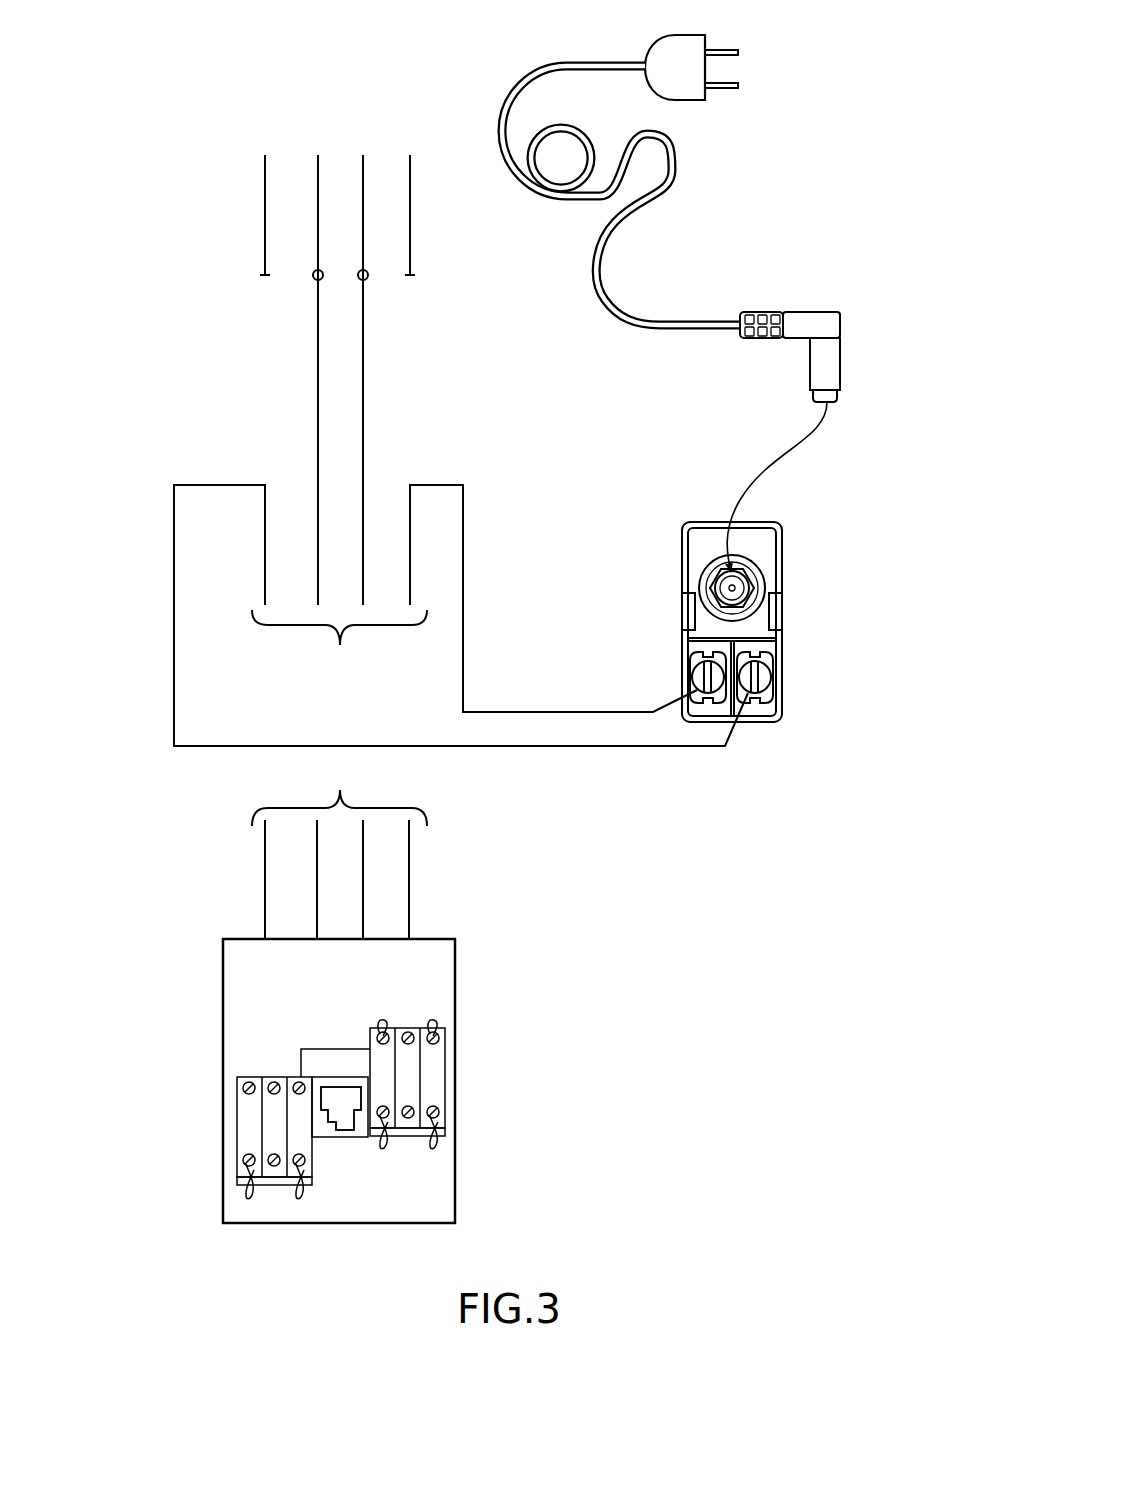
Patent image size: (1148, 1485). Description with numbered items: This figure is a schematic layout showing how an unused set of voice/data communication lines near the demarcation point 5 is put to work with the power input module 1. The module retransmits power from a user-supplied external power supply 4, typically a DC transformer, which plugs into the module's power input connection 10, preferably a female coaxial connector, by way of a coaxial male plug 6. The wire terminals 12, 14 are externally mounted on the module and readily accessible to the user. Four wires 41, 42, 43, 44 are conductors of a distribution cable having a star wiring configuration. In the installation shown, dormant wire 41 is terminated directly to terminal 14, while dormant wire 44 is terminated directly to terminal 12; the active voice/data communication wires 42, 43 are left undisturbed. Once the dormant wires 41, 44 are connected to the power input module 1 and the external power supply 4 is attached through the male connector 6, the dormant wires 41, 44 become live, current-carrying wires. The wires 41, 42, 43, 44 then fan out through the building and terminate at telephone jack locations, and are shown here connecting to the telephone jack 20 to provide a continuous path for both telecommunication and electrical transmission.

The power input module 1 is at (803, 620).
The external power supply 4 is at (677, 88).
The demarcation point 5 is at (327, 275).
The coaxial male plug 6 is at (840, 322).
The power input connection 10 is at (752, 575).
The wire terminal 12 is at (760, 677).
The wire terminal 14 is at (698, 673).
The telephone jack 20 is at (456, 965).
The dormant wire 41 is at (260, 576).
The active voice/data communication wire 42 is at (313, 576).
The active voice/data communication wire 43 is at (358, 576).
The dormant wire 44 is at (405, 576).